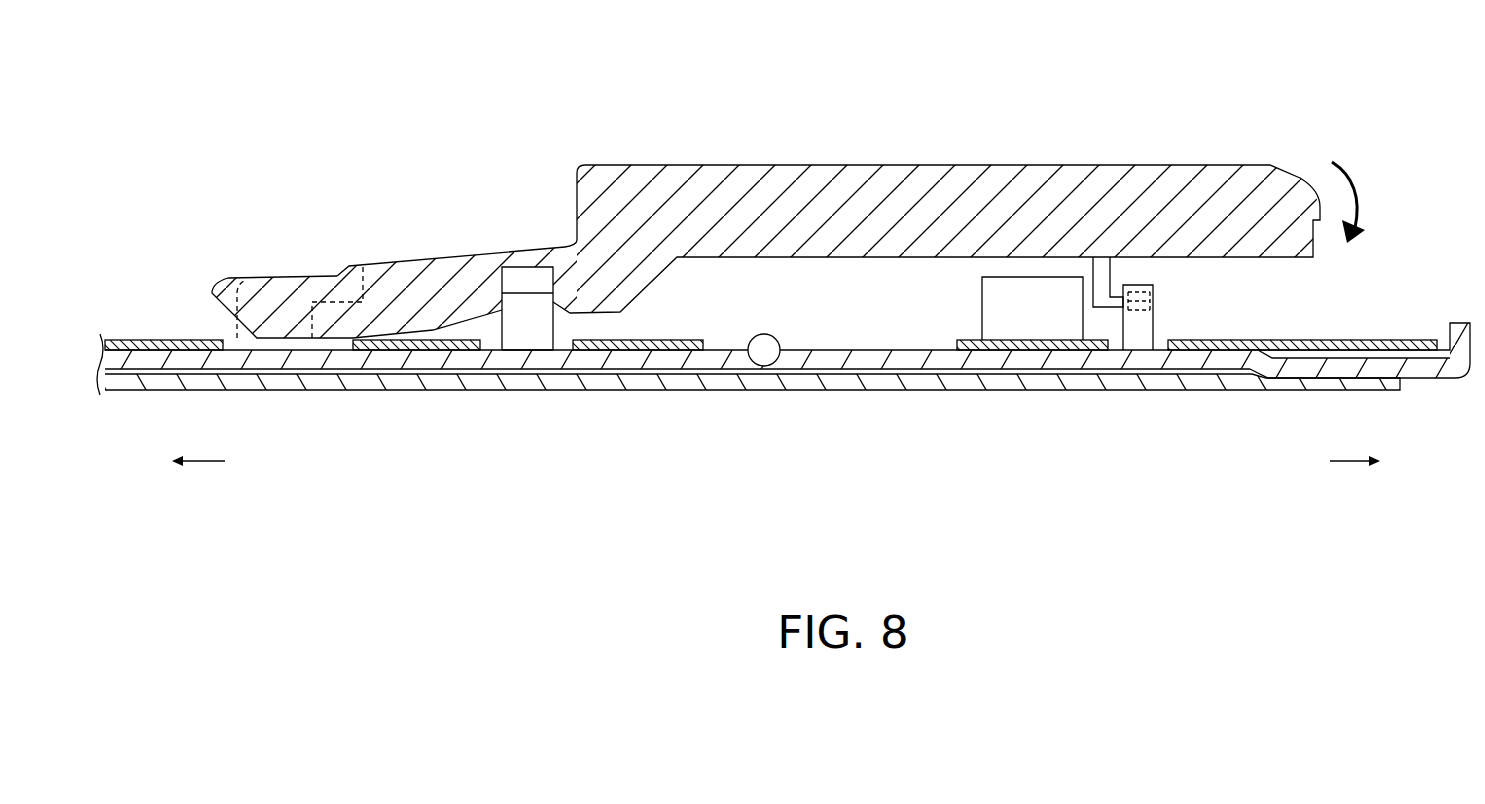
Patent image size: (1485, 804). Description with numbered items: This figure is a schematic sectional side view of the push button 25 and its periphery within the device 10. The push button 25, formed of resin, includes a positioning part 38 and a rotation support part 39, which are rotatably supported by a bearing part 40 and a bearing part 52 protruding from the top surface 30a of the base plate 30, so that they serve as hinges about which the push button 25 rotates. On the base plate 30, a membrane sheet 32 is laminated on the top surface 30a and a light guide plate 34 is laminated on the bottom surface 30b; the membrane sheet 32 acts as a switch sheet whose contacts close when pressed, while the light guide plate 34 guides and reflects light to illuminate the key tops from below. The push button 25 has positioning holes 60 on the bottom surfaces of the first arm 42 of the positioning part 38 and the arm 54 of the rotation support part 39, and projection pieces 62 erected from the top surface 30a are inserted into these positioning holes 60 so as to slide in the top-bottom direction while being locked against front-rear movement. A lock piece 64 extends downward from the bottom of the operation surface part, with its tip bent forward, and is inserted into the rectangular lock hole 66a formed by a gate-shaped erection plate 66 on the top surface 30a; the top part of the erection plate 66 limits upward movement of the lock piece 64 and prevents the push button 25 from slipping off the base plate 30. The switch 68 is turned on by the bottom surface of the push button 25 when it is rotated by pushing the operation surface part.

The sensor device 10 is at (138, 101).
The push button 25 is at (1058, 157).
The base plate 30 is at (837, 360).
The top surface 30a is at (770, 366).
The bottom surface 30b is at (703, 369).
The membrane sheet 32 is at (160, 345).
The light guide plate 34 is at (992, 390).
The positioning part 38 is at (393, 255).
The rotation support part 39 is at (268, 253).
The bearing part 40 is at (341, 255).
The first arm 42 is at (451, 255).
The bearing part 52 is at (343, 186).
The arm 54 is at (409, 186).
The positioning hole 60 is at (512, 280).
The projection piece 62 is at (528, 328).
The lock piece 64 is at (1103, 272).
The erection plate 66 is at (1138, 330).
The lock hole 66a is at (1155, 313).
The switch 68 is at (982, 303).